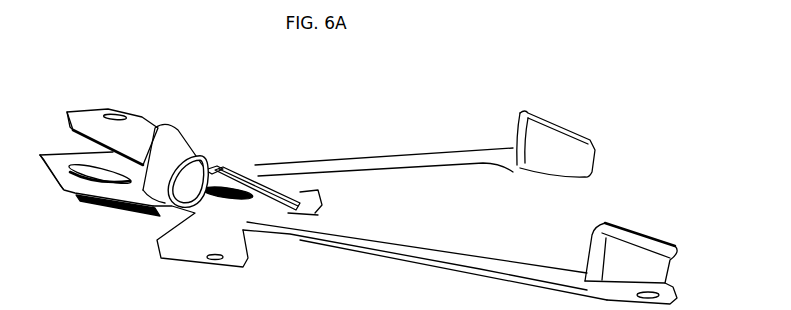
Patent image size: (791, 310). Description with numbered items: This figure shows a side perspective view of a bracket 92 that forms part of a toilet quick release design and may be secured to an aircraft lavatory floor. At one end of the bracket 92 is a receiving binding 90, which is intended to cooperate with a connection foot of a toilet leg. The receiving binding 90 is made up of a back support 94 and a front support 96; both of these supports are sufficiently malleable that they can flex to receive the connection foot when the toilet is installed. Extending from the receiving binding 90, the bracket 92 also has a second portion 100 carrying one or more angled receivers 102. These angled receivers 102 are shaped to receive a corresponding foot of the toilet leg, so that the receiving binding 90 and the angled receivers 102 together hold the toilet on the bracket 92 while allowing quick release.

The receiving binding 90 is at (74, 103).
The bracket 92 is at (473, 94).
The back support 94 is at (165, 150).
The front support 96 is at (248, 186).
The second portion 100 is at (630, 178).
The angled receivers 102 is at (642, 207).